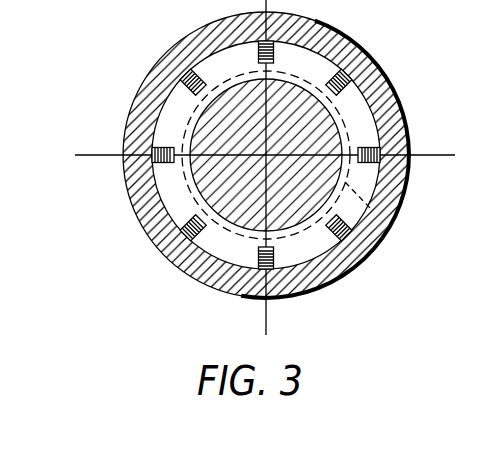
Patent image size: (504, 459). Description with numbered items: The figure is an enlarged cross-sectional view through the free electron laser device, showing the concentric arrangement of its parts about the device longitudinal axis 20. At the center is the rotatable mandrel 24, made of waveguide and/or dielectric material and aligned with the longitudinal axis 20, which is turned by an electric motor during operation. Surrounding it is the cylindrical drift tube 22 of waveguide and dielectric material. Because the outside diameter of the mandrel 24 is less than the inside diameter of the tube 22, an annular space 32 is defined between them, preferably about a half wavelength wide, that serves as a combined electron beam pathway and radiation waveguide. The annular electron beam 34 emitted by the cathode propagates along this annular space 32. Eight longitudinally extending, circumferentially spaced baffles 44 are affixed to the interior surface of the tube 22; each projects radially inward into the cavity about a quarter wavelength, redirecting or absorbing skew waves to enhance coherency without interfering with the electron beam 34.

The device longitudinal axis 20 is at (268, 161).
The cylindrical drift tube 22 is at (405, 196).
The rotatable mandrel 24 is at (266, 155).
The annular space 32 is at (168, 193).
The electron beam 34 is at (390, 236).
The baffles 44 is at (366, 142).